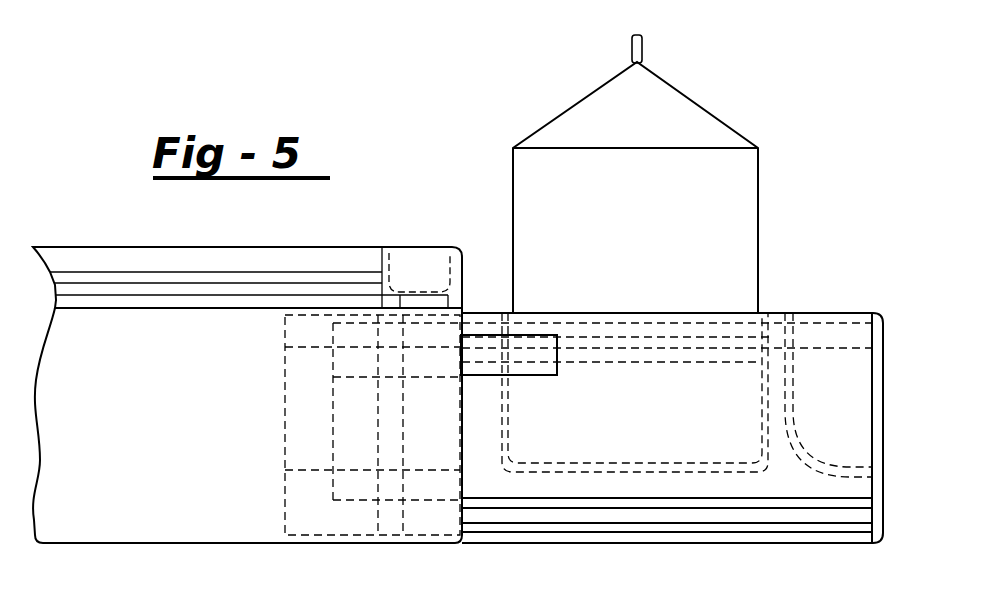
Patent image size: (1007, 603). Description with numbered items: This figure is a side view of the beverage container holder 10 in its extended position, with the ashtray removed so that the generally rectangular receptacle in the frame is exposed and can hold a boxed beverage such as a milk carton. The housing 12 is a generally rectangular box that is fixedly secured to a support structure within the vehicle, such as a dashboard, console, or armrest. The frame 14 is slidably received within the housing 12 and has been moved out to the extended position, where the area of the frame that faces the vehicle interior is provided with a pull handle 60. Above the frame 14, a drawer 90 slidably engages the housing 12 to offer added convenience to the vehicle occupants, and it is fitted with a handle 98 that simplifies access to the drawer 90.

The beverage container holder 10 is at (118, 211).
The housing 12 is at (175, 513).
The frame 14 is at (575, 530).
The pull handle 60 is at (873, 368).
The drawer 90 is at (340, 265).
The handle 98 is at (425, 262).